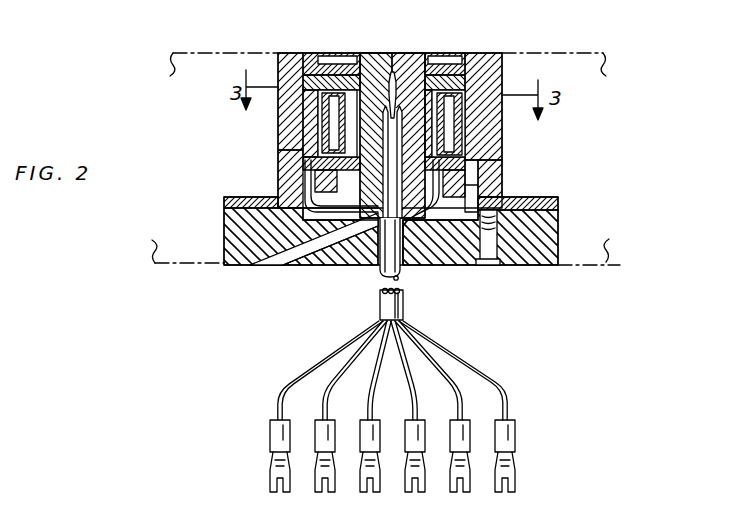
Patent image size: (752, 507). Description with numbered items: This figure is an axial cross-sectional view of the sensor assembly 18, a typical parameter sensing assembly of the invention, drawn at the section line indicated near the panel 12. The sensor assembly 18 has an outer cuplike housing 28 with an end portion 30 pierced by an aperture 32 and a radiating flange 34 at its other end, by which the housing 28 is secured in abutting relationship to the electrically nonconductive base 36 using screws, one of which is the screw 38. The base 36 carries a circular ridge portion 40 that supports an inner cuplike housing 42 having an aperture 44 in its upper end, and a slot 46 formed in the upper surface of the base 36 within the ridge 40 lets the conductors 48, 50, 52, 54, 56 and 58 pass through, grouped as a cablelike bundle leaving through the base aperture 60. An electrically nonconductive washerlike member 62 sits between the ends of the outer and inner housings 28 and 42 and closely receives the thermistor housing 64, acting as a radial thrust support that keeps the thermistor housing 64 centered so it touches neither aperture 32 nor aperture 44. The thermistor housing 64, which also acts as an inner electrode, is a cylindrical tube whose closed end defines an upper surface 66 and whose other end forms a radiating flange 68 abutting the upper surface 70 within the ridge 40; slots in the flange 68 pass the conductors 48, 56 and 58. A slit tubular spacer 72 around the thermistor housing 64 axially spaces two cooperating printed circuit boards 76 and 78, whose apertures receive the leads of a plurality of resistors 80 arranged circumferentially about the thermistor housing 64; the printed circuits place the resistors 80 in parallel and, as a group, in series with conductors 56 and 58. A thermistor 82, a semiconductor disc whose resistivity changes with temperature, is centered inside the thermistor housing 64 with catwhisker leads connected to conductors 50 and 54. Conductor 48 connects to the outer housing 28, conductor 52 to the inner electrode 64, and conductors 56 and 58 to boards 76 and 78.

The mounting panel 12 is at (197, 51).
The sensor assembly 18 is at (470, 53).
The outer cuplike housing 28 is at (278, 157).
The end portion 30 is at (307, 53).
The aperture 32 is at (384, 39).
The radiating flange 34 is at (232, 197).
The electrically nonconductive base 36 is at (560, 239).
The screw 38 is at (493, 247).
The circular ridge portion 40 is at (478, 181).
The inner cuplike housing 42 is at (318, 114).
The aperture 44 is at (372, 68).
The slot 46 is at (440, 220).
The conductor 48 is at (275, 252).
The conductor 50 is at (370, 208).
The conductor 52 is at (363, 212).
The conductor 54 is at (400, 192).
The conductor 56 is at (453, 395).
The conductor 58 is at (437, 173).
The base aperture 60 is at (380, 268).
The washerlike member 62 is at (323, 53).
The thermistor housing 64 is at (425, 133).
The upper surface 66 is at (366, 53).
The radiating flange 68 is at (313, 233).
The upper surface 70 is at (458, 210).
The tubular spacer 72 is at (347, 119).
The printed circuit board 76 is at (467, 67).
The printed circuit board 78 is at (467, 161).
The resistors 80 is at (330, 133).
The thermistor 82 is at (417, 53).